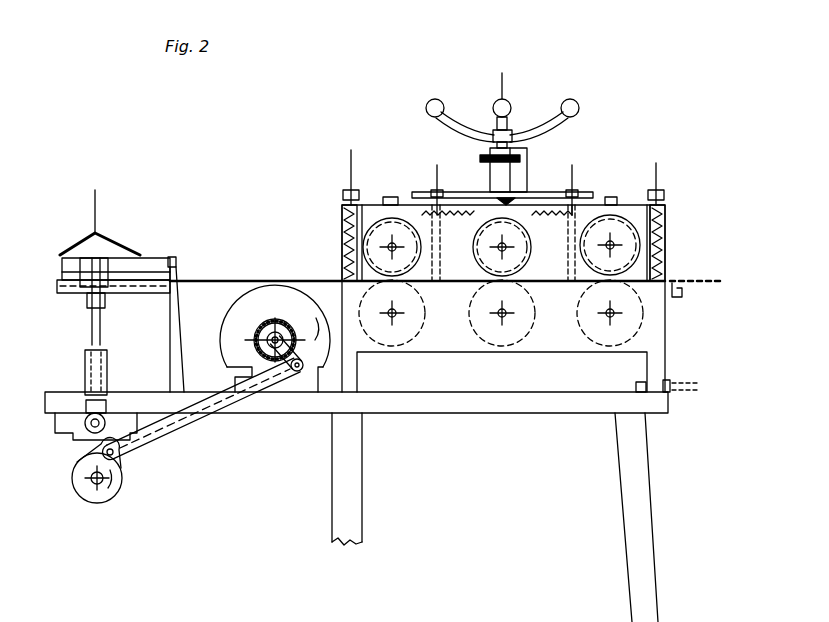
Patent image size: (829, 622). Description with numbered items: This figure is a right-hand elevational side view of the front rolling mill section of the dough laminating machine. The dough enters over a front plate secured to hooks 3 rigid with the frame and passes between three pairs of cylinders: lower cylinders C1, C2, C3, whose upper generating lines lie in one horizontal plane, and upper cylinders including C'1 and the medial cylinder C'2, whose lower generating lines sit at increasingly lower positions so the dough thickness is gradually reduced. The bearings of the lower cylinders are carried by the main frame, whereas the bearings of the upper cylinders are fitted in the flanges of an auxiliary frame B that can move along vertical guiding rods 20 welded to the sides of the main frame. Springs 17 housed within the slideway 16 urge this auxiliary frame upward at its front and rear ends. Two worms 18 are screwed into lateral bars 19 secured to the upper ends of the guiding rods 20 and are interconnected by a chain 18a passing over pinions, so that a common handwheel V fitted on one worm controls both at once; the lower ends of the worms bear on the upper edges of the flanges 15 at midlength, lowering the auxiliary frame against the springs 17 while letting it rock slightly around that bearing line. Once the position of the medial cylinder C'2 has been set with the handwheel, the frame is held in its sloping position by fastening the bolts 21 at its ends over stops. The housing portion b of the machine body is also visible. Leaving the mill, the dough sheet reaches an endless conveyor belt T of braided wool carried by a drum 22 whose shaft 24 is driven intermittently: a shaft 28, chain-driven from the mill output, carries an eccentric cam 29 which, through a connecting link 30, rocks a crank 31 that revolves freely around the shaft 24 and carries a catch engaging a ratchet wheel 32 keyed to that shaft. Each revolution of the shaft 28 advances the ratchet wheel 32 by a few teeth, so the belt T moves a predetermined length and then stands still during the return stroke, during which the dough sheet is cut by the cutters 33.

The handwheel V is at (436, 100).
The chain 18a is at (517, 147).
The worm 18 is at (452, 153).
The lateral bar 19 is at (547, 190).
The vertical guiding rod 20 is at (582, 212).
The bolt 21 is at (347, 188).
The spring 17 is at (345, 222).
The slideway 16 is at (665, 252).
The hook 3 is at (678, 297).
The upper cylinder C'1 is at (640, 197).
The lower cylinder C1 is at (627, 333).
The medial upper cylinder C'2 is at (531, 339).
The lower cylinder C2 is at (502, 342).
The lower cylinder C3 is at (392, 345).
The roller housing b is at (440, 340).
The flange 15 is at (458, 270).
The auxiliary frame B is at (655, 413).
The endless conveyor belt T is at (416, 305).
The drum 22 is at (268, 300).
The ratchet wheel 32 is at (263, 320).
The shaft 24 is at (295, 372).
The crank 31 is at (273, 370).
The connecting link 30 is at (197, 418).
The eccentric cam 29 is at (120, 483).
The shaft 28 is at (96, 483).
The cutter 33 is at (122, 245).